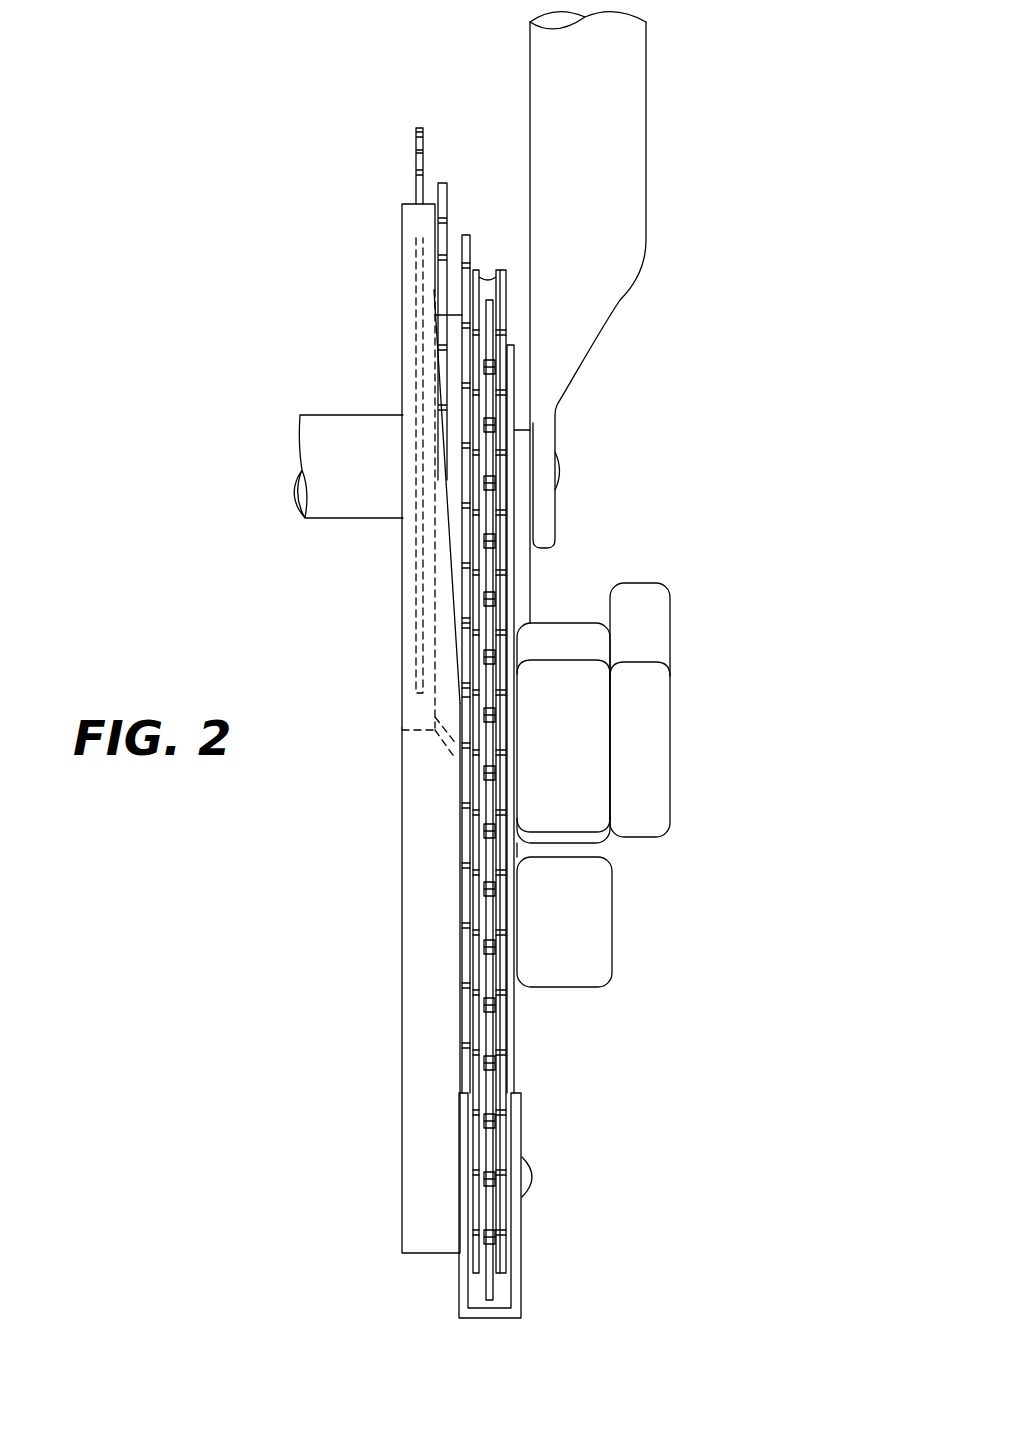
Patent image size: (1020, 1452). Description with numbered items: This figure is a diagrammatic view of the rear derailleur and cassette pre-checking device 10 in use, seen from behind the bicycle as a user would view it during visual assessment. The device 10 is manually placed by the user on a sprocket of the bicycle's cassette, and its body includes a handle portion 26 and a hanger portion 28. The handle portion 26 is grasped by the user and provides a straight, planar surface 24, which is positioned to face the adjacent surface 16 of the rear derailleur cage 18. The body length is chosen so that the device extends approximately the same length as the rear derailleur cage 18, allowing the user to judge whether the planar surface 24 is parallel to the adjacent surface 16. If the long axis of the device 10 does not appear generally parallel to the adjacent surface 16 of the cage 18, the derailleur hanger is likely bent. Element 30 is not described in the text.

The rear derailleur and cassette pre-checking device 10 is at (380, 978).
The adjacent surface 16 is at (458, 1282).
The rear derailleur cage 18 is at (522, 1212).
The planar surface 24 is at (460, 1028).
The handle portion 26 is at (412, 1110).
The hanger portion 28 is at (405, 320).
The hidden insert 30 is at (415, 622).